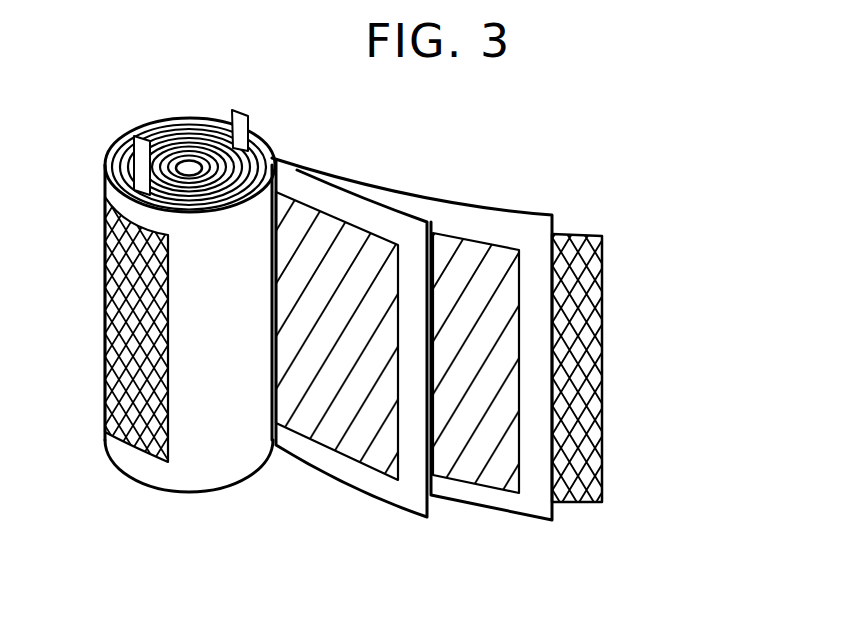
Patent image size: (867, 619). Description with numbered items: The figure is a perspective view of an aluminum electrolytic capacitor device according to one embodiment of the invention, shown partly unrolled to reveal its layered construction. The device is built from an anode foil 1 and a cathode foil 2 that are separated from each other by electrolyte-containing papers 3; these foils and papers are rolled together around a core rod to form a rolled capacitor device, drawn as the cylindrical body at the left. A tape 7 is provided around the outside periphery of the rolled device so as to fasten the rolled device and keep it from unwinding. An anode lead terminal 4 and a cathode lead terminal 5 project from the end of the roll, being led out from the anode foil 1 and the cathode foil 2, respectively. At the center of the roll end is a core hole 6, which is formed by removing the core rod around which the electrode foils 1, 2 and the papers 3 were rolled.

The anode foil 1 is at (325, 435).
The cathode foil 2 is at (468, 458).
The electrolyte-containing papers 3 is at (462, 218).
The anode lead terminal 4 is at (241, 121).
The cathode lead terminal 5 is at (128, 143).
The core hole 6 is at (189, 165).
The tape 7 is at (592, 370).